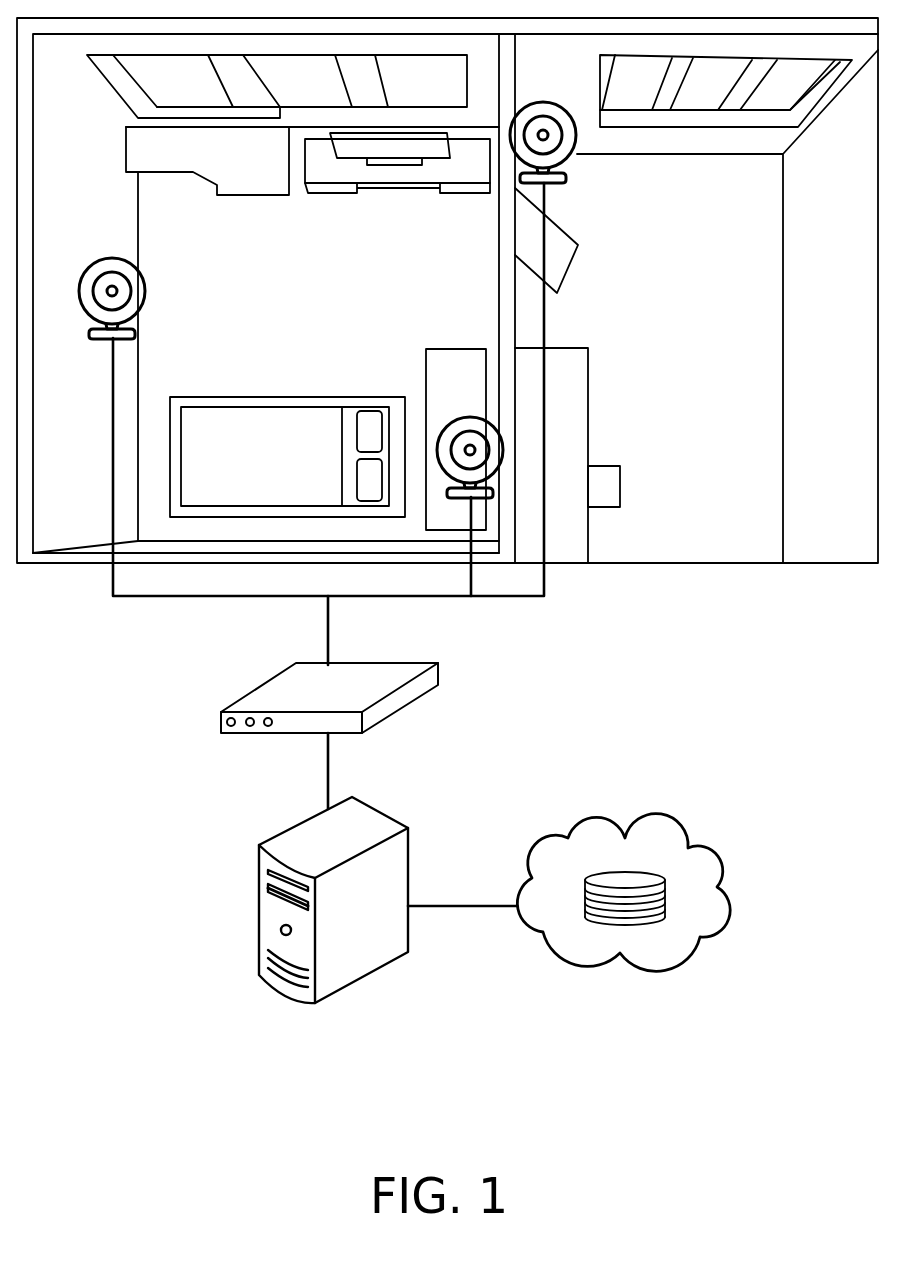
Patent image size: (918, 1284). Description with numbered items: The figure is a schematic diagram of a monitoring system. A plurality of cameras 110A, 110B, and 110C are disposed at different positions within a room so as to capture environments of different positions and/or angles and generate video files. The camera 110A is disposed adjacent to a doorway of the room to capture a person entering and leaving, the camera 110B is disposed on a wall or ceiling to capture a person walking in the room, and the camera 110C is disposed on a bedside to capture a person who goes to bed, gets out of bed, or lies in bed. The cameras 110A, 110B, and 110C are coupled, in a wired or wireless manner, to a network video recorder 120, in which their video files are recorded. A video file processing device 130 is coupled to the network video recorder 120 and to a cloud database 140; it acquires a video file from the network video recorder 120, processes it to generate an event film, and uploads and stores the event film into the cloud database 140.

The camera 110A is at (578, 152).
The camera 110B is at (145, 285).
The camera 110C is at (463, 418).
The network video recorder 120 is at (438, 675).
The video file processing device 130 is at (258, 922).
The cloud database 140 is at (598, 827).